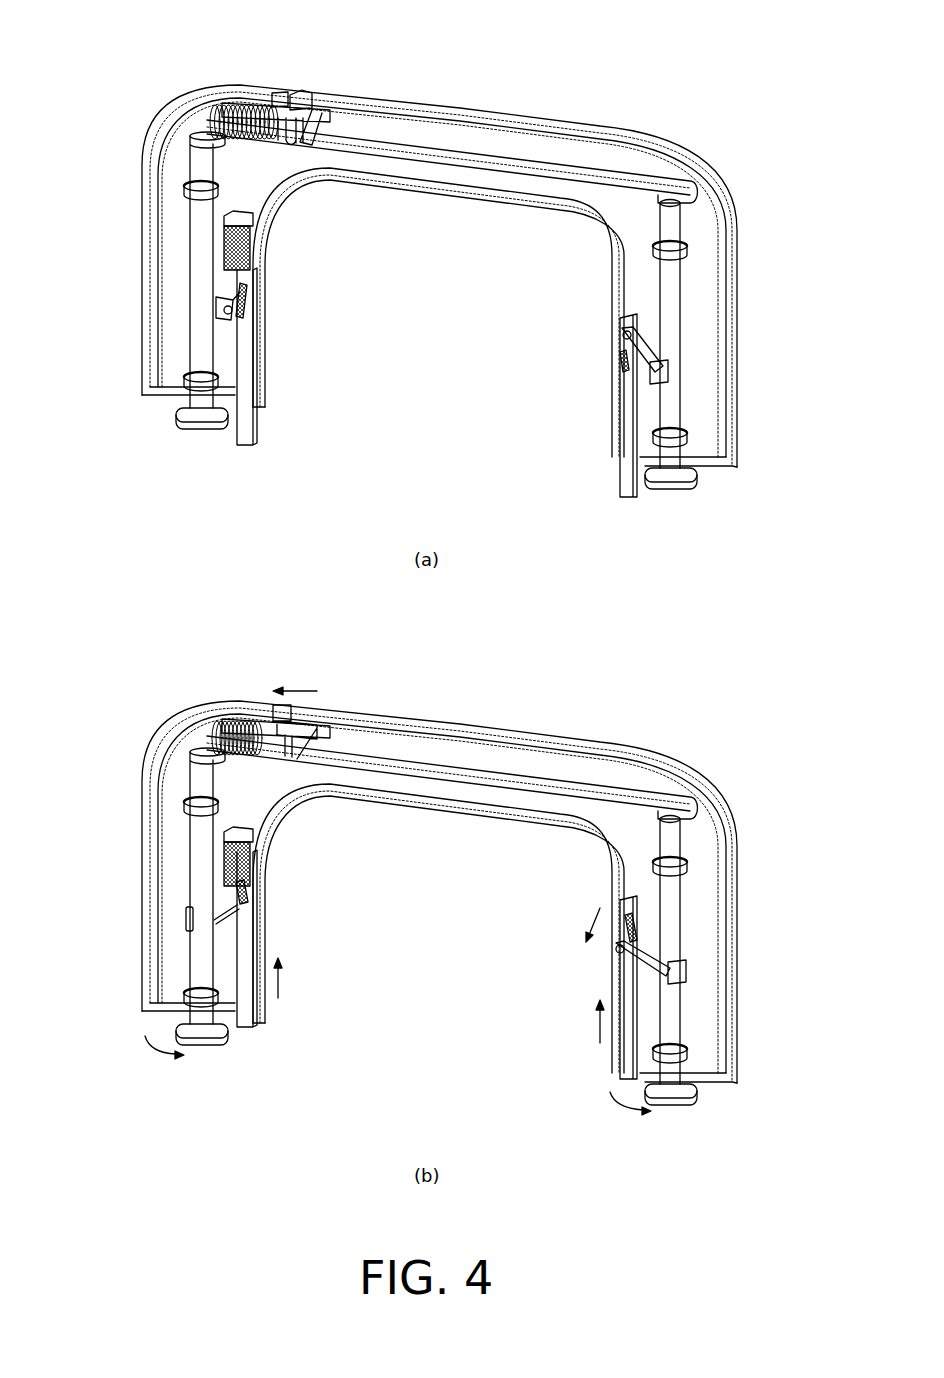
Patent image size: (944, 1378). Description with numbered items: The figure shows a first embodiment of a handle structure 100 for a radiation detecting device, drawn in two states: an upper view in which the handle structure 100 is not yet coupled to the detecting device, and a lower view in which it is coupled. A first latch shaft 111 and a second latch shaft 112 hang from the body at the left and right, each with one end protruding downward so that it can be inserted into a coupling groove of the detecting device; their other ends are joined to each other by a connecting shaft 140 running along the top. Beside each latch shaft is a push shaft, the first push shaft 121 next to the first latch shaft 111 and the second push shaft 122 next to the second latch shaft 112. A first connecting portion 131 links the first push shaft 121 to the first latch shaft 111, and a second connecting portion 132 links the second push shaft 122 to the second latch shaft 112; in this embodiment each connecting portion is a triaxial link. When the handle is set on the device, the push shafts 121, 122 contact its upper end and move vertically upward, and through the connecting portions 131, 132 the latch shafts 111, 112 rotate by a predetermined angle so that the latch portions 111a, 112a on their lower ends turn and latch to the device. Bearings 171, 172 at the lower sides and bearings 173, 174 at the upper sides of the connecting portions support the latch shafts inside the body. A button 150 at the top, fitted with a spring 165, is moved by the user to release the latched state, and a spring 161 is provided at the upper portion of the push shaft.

The handle structure 100 is at (546, 126).
The connecting shaft 140 is at (462, 165).
The button 150 is at (308, 106).
The spring 165 is at (246, 104).
The spring 161 is at (250, 240).
The first latch shaft 111 is at (200, 272).
The latch portion 111a is at (200, 432).
The second latch shaft 112 is at (672, 397).
The latch portion 112a is at (668, 492).
The first push shaft 121 is at (246, 420).
The second push shaft 122 is at (619, 468).
The first connecting portion 131 is at (246, 304).
The second connecting portion 132 is at (624, 352).
The bearing 171 is at (187, 378).
The bearing 172 is at (690, 440).
The bearing 173 is at (184, 190).
The bearing 174 is at (688, 250).